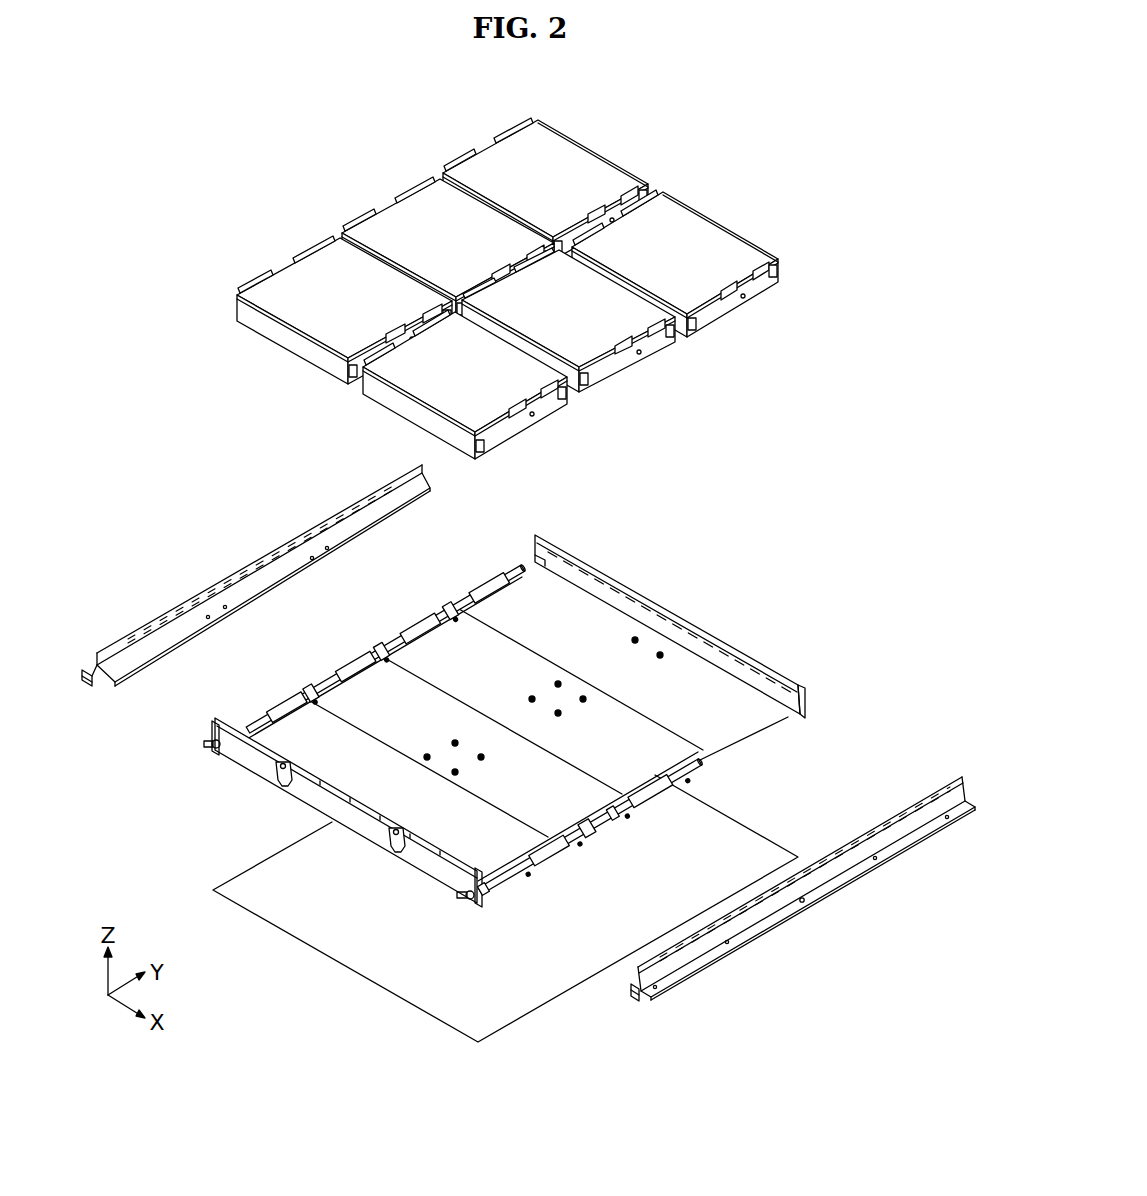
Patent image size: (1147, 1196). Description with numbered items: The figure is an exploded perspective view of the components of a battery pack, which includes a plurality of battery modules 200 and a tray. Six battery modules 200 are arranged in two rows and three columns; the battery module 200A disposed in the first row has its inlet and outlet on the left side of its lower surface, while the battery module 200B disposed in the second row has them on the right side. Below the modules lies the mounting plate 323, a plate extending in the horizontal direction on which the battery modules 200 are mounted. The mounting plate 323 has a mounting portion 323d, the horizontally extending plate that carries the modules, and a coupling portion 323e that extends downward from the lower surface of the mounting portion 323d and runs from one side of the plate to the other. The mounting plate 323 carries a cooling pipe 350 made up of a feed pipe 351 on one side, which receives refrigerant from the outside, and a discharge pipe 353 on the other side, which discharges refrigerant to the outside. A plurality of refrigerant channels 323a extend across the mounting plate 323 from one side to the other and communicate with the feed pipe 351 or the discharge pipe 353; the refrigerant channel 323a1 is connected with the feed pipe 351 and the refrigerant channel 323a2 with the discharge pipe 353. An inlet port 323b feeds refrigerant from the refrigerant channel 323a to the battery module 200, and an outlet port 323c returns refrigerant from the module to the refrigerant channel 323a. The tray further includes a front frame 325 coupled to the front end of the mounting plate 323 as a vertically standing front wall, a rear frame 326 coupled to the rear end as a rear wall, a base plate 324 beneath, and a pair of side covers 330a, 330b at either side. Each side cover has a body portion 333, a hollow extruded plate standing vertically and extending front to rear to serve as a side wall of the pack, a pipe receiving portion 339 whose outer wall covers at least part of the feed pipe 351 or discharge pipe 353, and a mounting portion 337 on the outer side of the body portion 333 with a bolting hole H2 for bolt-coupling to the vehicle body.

The battery module 200 is at (507, 273).
The battery module disposed in the first row 200A is at (612, 167).
The battery module disposed in the second row 200B is at (638, 134).
The mounting plate 323 is at (501, 734).
The refrigerant channel 323a is at (584, 849).
The refrigerant channel 323a1 is at (645, 830).
The refrigerant channel 323a2 is at (571, 846).
The inlet port 323b is at (455, 734).
The outlet port 323c is at (428, 753).
The mounting portion 323d is at (495, 789).
The coupling portion 323e is at (583, 822).
The base plate 324 is at (268, 871).
The front frame 325 is at (250, 764).
The rear frame 326 is at (685, 620).
The side cover 330a is at (187, 556).
The side cover 330b is at (895, 890).
The body portion 333 is at (306, 534).
The mounting portion 337 is at (87, 673).
The pipe receiving portion 339 is at (138, 658).
The cooling pipe 350 is at (354, 649).
The feed pipe 351 is at (597, 810).
The discharge pipe 353 is at (317, 688).
The bolting hole H2 is at (803, 902).